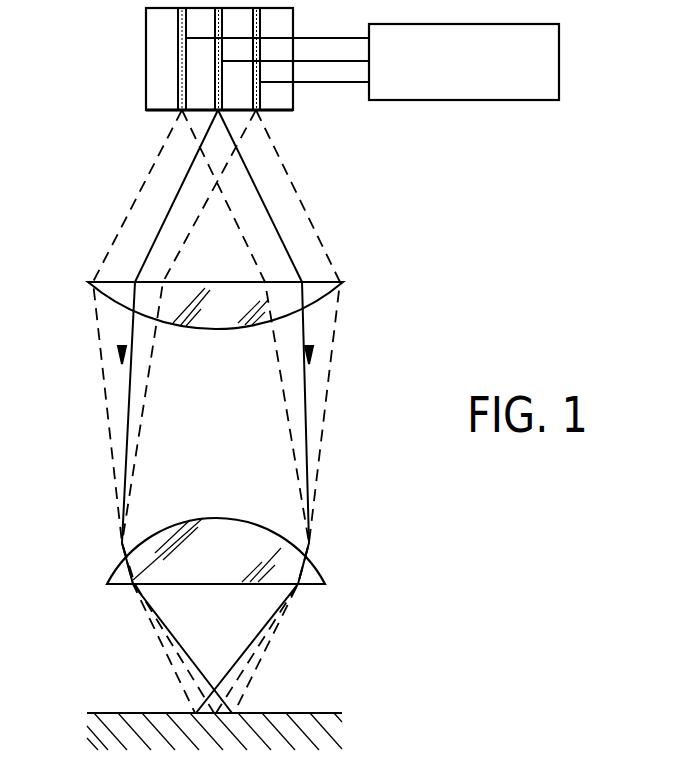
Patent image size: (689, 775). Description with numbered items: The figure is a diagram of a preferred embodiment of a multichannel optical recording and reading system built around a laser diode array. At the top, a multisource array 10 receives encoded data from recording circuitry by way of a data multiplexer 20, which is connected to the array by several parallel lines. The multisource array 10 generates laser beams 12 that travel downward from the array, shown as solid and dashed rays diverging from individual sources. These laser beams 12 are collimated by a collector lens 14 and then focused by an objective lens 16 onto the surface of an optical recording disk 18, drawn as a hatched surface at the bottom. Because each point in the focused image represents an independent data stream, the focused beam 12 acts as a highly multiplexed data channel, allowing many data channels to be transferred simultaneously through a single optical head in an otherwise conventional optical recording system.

The multisource array 10 is at (147, 50).
The laser beams 12 is at (130, 209).
The collector lens 14 is at (103, 297).
The objective lens 16 is at (110, 571).
The optical recording disk 18 is at (107, 713).
The data multiplexer 20 is at (560, 70).